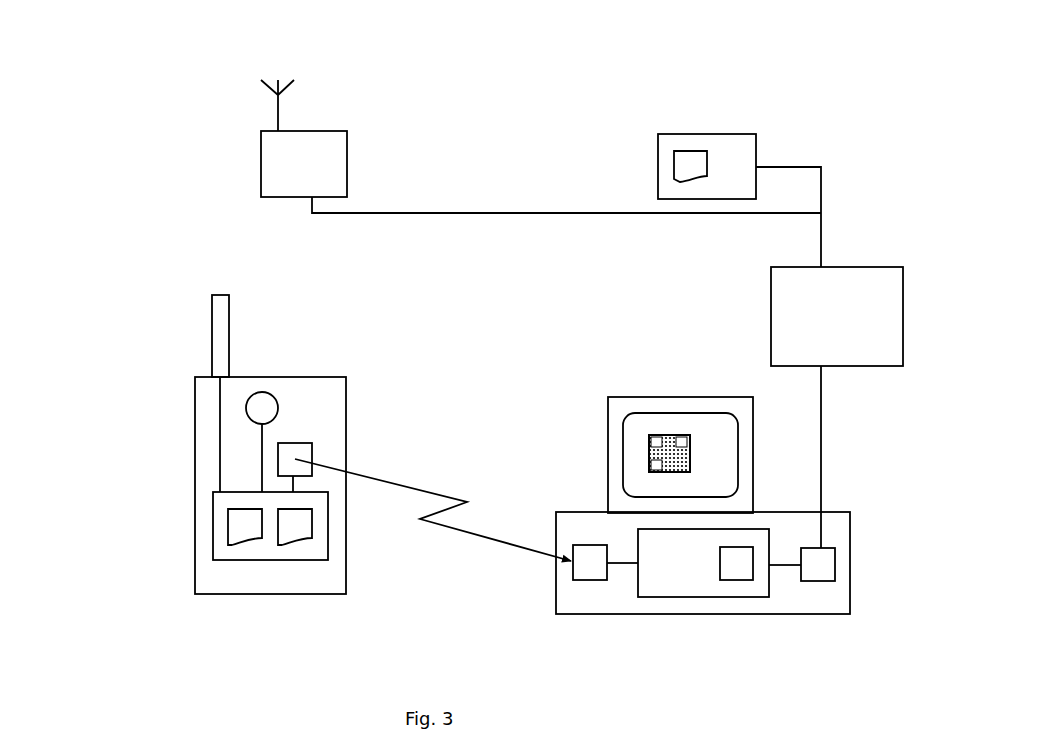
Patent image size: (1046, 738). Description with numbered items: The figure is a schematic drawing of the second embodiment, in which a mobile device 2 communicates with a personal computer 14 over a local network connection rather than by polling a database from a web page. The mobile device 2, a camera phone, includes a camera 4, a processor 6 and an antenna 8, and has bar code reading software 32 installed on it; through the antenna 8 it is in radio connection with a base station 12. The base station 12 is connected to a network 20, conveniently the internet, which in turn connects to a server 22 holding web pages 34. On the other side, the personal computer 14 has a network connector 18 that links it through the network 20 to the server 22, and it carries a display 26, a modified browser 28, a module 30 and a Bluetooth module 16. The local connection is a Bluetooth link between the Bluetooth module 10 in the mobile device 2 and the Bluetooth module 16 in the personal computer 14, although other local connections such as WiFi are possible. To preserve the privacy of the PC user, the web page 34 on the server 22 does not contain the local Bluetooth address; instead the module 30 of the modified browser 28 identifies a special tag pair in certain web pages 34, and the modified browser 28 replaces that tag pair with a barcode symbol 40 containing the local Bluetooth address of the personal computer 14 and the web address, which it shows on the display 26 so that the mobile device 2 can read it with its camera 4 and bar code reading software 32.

The mobile device 2 is at (195, 445).
The camera 4 is at (278, 405).
The processor 6 is at (227, 560).
The antenna 8 is at (212, 328).
The Bluetooth module 10 is at (297, 443).
The base station 12 is at (261, 163).
The personal computer 14 is at (609, 614).
The Bluetooth module 16 is at (571, 565).
The network connector 18 is at (817, 581).
The network 20 is at (771, 333).
The server 22 is at (658, 185).
The display 26 is at (608, 460).
The modified browser 28 is at (692, 597).
The module 30 is at (735, 580).
The bar code reading software 32 is at (228, 527).
The web page 34 is at (691, 151).
The barcode symbol 40 is at (652, 445).